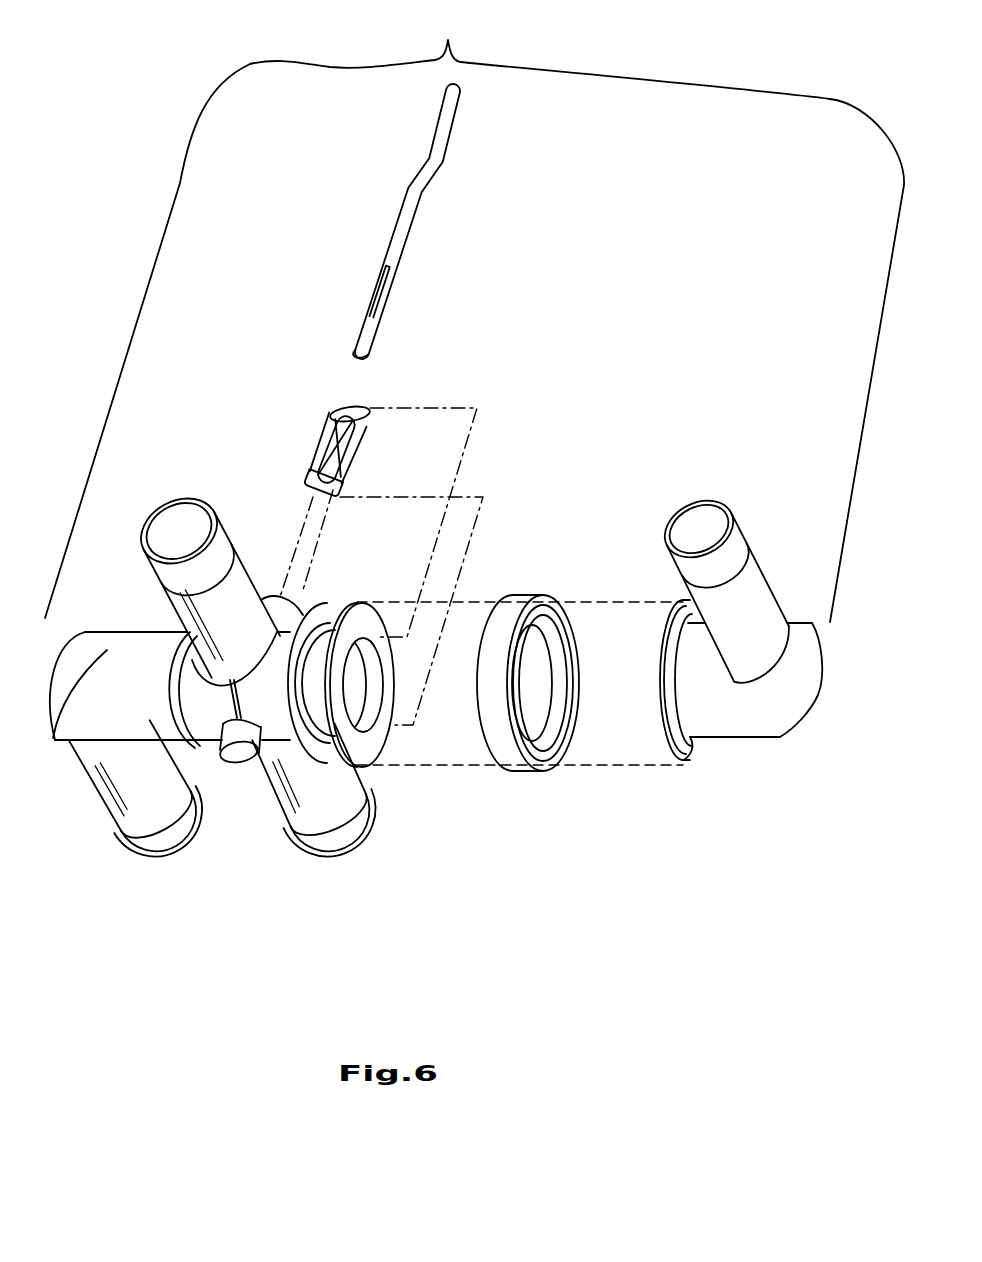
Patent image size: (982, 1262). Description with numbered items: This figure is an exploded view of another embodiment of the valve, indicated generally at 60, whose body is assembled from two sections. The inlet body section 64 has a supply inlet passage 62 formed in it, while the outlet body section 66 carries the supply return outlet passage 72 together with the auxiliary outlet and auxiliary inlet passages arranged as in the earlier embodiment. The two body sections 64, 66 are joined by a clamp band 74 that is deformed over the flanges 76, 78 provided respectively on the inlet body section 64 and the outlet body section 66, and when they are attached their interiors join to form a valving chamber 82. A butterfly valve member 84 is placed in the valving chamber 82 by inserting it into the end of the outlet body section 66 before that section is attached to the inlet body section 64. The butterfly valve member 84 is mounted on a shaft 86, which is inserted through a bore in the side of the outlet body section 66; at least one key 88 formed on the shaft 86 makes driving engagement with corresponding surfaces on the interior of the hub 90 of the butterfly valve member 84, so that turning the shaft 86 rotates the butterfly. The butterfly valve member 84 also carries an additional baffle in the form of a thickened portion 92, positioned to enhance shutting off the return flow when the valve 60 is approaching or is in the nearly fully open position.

The valve 60 is at (474, 311).
The supply inlet passage 62 is at (693, 505).
The inlet body section 64 is at (741, 709).
The outlet body section 66 is at (120, 632).
The supply return outlet passage 72 is at (178, 503).
The clamp band 74 is at (522, 772).
The flange 76 is at (688, 765).
The flange 78 is at (394, 718).
The valving chamber 82 is at (350, 693).
The butterfly valve member 84 is at (309, 427).
The shaft 86 is at (382, 221).
The key 88 is at (375, 300).
The hub 90 is at (340, 408).
The thickened portion 92 is at (310, 470).